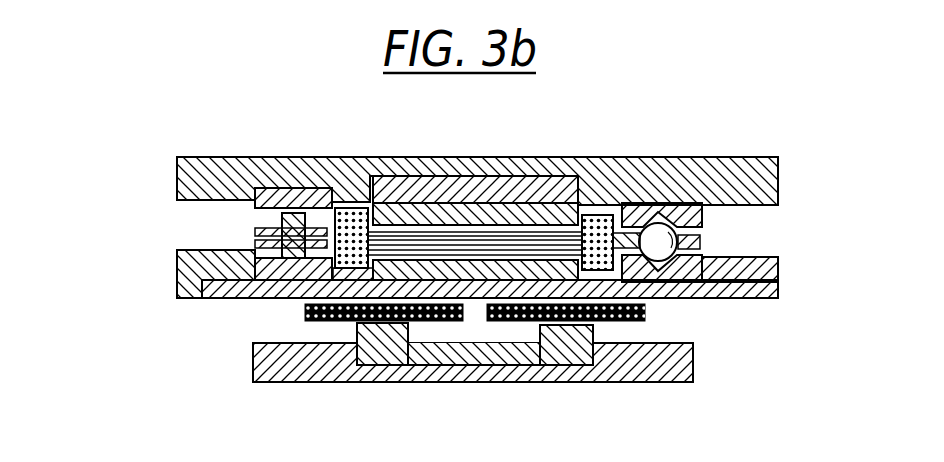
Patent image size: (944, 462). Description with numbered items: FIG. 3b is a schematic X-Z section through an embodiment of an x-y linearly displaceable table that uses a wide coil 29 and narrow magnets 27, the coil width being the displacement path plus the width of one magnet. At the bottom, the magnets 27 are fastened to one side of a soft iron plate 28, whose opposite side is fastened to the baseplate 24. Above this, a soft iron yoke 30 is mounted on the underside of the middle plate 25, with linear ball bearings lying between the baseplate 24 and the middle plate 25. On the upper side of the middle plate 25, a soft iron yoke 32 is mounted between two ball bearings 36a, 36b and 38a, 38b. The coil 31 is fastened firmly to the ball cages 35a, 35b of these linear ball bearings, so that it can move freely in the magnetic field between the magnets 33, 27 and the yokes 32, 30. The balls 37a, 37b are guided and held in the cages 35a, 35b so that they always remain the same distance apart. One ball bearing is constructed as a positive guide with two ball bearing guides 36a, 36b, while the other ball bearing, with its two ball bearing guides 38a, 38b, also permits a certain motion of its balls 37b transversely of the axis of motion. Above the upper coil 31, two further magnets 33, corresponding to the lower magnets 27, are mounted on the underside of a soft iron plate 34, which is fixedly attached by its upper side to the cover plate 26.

The baseplate 24 is at (345, 368).
The middle plate 25 is at (177, 268).
The cover plate 26 is at (177, 178).
The magnets 27 is at (400, 332).
The soft iron plate 28 is at (569, 352).
The coil 29 is at (327, 321).
The soft iron yoke 30 is at (733, 298).
The coil 31 is at (598, 222).
The soft iron yoke 32 is at (552, 268).
The magnets 33 is at (502, 210).
The soft iron plate 34 is at (452, 186).
The ball cage 35a is at (705, 232).
The ball cage 35b is at (255, 230).
The ball bearing guide 36a is at (661, 216).
The ball bearing guide 36b is at (685, 268).
The balls 37a is at (705, 238).
The balls 37b is at (299, 255).
The ball bearing guide 38a is at (284, 196).
The ball bearing guide 38b is at (303, 270).